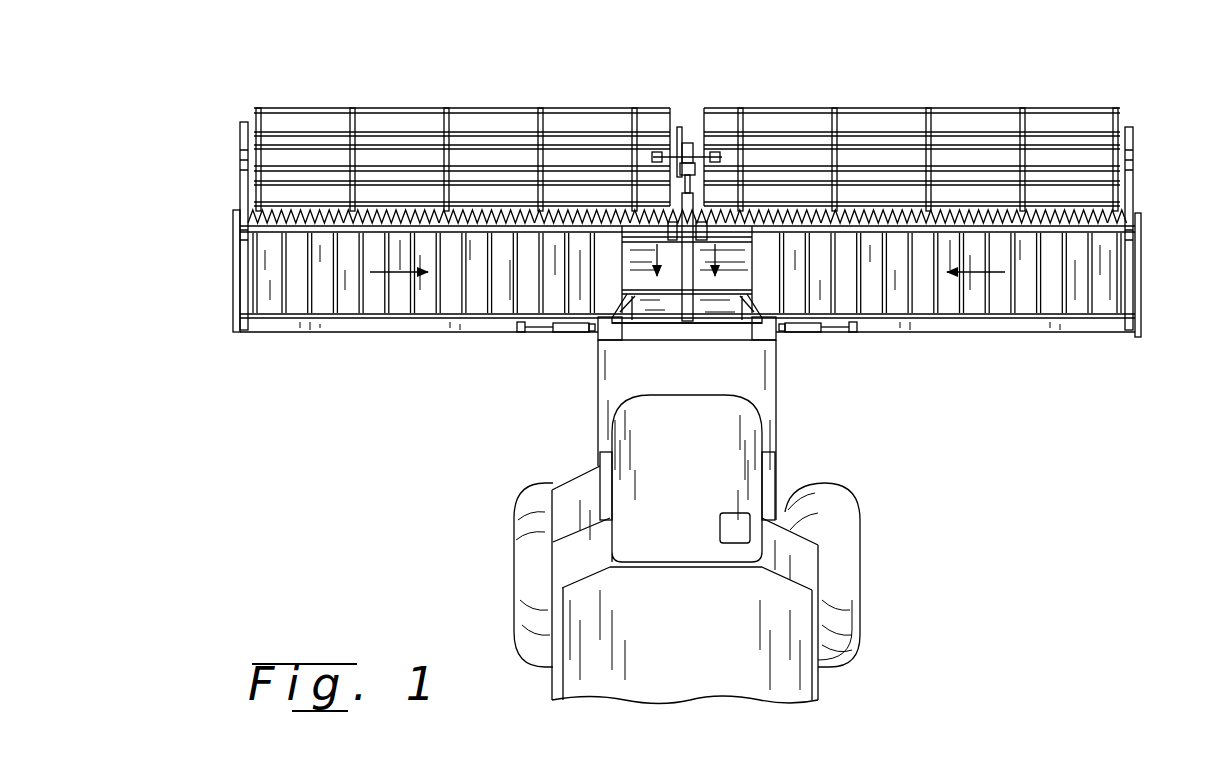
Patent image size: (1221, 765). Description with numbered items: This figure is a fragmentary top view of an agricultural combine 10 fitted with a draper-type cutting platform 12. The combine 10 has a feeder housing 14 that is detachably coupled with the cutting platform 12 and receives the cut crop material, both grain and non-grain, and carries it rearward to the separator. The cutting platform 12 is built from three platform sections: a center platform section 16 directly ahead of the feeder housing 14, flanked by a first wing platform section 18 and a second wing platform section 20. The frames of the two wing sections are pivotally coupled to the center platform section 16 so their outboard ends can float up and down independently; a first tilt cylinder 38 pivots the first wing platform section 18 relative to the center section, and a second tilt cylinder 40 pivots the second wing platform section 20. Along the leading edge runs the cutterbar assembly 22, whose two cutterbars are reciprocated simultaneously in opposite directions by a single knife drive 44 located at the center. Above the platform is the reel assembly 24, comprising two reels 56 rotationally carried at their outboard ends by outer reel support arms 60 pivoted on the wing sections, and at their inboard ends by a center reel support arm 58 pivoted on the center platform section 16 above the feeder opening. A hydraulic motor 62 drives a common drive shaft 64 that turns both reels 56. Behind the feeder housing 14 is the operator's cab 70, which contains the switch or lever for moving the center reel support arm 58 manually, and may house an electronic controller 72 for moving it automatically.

The combine 10 is at (957, 510).
The cutting platform 12 is at (687, 118).
The feeder housing 14 is at (687, 510).
The center platform section 16 is at (652, 221).
The first wing platform section 18 is at (438, 322).
The second wing platform section 20 is at (950, 321).
The cutterbar assembly 22 is at (1088, 213).
The reel assembly 24 is at (716, 104).
The first tilt cylinder 38 is at (573, 333).
The second tilt cylinder 40 is at (800, 337).
The knife drive 44 is at (668, 228).
The reel 56 is at (477, 107).
The center reel support arm 58 is at (680, 277).
The outer reel support arm 60 is at (240, 165).
The hydraulic motor 62 is at (695, 168).
The drive shaft 64 is at (698, 152).
The operator's cab 70 is at (705, 485).
The electronic controller 72 is at (720, 532).